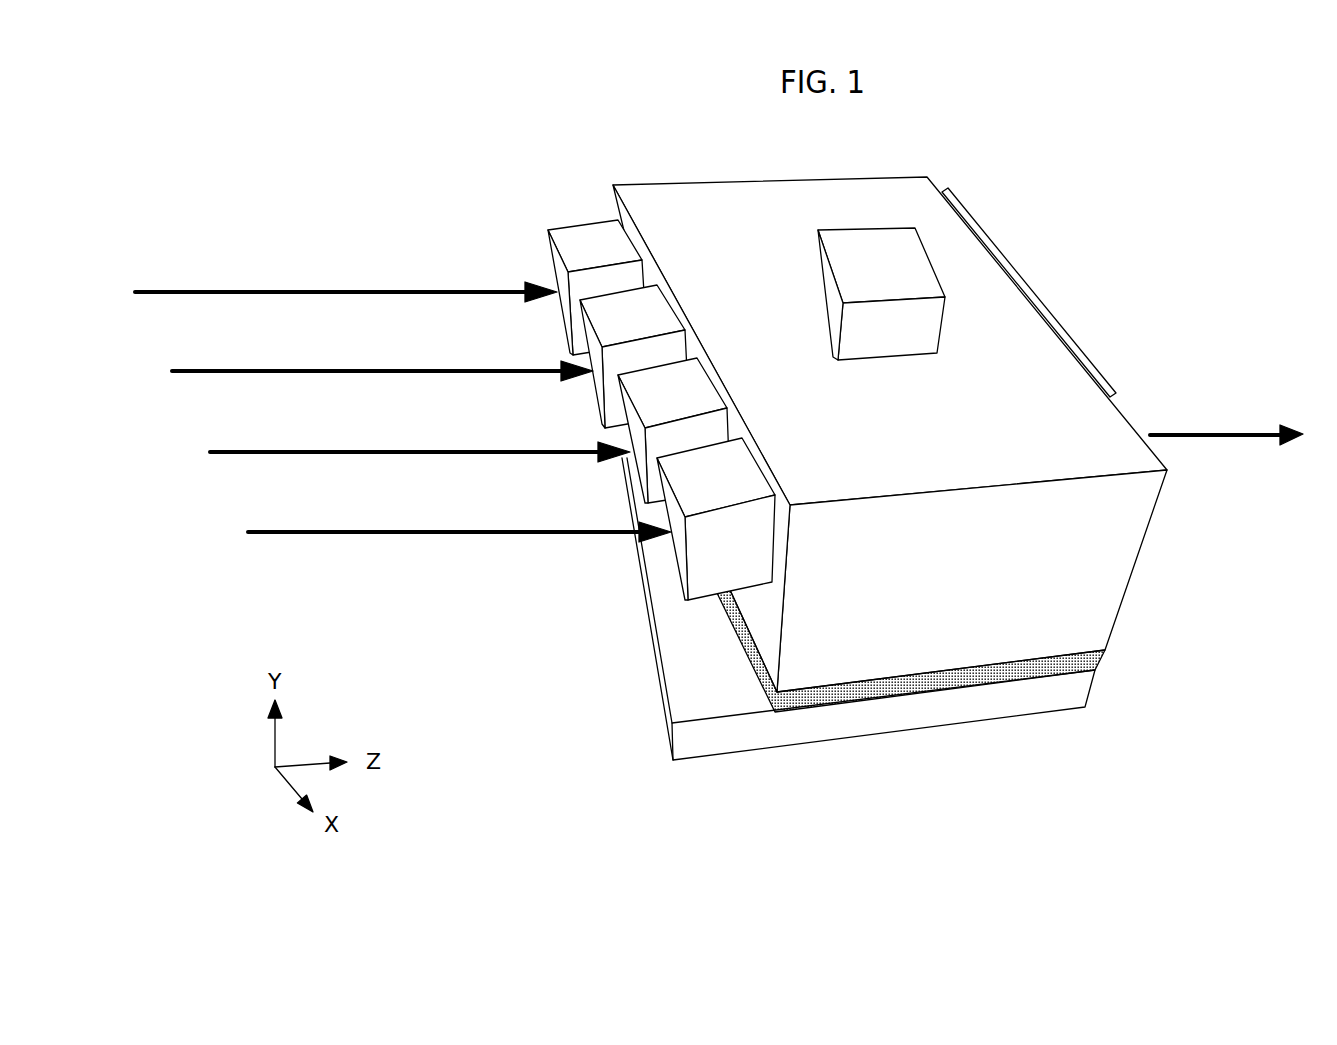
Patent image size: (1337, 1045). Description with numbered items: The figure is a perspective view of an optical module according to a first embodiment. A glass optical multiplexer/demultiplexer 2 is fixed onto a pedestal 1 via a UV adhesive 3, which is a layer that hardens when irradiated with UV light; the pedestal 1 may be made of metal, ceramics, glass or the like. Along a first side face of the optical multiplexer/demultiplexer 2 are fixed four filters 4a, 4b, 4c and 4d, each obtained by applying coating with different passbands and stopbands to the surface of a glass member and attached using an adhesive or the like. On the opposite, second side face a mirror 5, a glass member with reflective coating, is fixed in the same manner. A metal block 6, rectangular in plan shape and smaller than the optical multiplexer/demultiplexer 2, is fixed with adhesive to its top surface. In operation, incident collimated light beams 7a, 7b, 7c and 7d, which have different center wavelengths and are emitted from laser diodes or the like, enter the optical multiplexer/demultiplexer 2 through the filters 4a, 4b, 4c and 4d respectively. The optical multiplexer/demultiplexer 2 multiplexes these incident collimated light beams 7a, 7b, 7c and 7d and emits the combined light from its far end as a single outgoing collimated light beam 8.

The pedestal 1 is at (745, 742).
The optical multiplexer/demultiplexer 2 is at (1093, 622).
The UV adhesive 3 is at (1047, 677).
The filter 4a is at (670, 560).
The filter 4b is at (632, 461).
The filter 4c is at (590, 393).
The filter 4d is at (560, 315).
The mirror 5 is at (1035, 293).
The metal block 6 is at (870, 250).
The incident collimated light beam 7a is at (282, 534).
The incident collimated light beam 7b is at (237, 455).
The incident collimated light beam 7c is at (197, 373).
The incident collimated light beam 7d is at (163, 294).
The outgoing collimated light beam 8 is at (1222, 435).